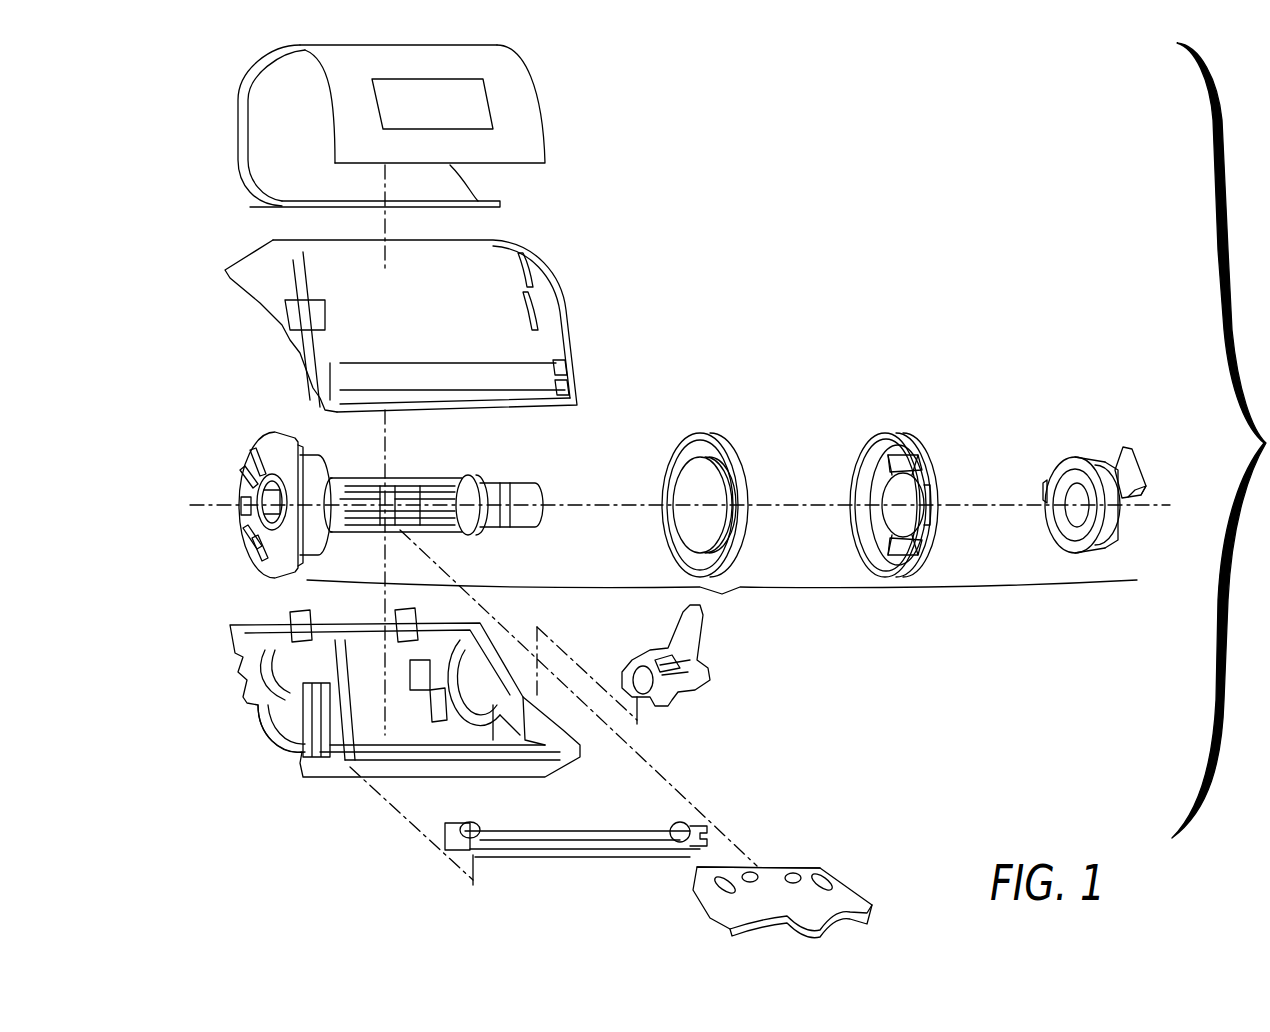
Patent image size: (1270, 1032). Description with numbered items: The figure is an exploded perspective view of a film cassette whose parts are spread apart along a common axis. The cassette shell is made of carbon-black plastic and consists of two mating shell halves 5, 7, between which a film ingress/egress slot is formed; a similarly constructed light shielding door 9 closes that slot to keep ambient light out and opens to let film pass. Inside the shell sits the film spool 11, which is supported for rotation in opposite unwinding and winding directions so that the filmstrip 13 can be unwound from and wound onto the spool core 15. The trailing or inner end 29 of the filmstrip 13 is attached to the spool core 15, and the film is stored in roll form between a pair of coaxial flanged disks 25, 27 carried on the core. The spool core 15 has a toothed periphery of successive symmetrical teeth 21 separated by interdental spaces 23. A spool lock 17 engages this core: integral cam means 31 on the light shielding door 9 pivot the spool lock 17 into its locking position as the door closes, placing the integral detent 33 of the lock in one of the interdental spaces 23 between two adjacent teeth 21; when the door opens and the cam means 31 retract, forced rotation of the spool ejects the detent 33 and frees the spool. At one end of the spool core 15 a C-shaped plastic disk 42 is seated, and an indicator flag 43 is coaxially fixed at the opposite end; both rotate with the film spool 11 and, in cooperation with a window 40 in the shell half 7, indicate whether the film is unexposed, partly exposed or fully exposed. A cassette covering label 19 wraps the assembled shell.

The shell half 5 is at (557, 290).
The shell half 7 is at (273, 757).
The light shielding door 9 is at (555, 857).
The film spool 11 is at (722, 602).
The filmstrip 13 is at (848, 893).
The spool core 15 is at (460, 475).
The spool lock 17 is at (705, 673).
The cassette covering label 19 is at (530, 52).
The teeth 21 is at (1108, 460).
The interdental spaces 23 is at (1130, 450).
The flanged disk 25 is at (883, 435).
The flanged disk 27 is at (705, 432).
The trailing end 29 is at (770, 866).
The cam means 31 is at (680, 825).
The detent 33 is at (665, 665).
The window 40 is at (273, 725).
The disk 42 is at (270, 447).
The indicator flag 43 is at (1145, 485).